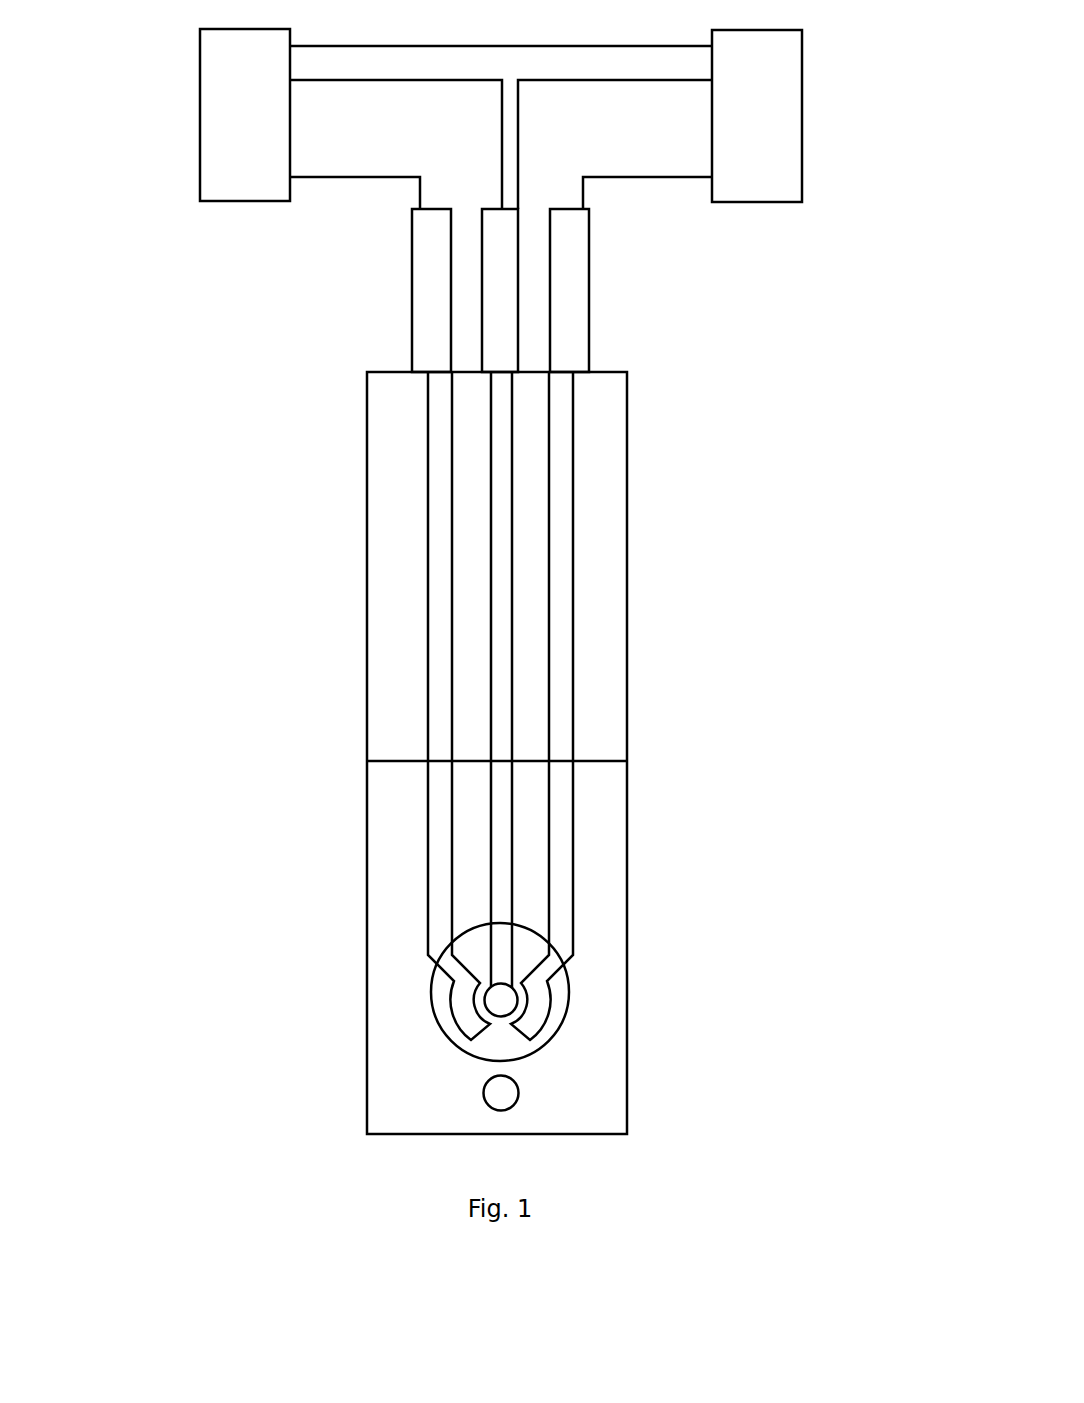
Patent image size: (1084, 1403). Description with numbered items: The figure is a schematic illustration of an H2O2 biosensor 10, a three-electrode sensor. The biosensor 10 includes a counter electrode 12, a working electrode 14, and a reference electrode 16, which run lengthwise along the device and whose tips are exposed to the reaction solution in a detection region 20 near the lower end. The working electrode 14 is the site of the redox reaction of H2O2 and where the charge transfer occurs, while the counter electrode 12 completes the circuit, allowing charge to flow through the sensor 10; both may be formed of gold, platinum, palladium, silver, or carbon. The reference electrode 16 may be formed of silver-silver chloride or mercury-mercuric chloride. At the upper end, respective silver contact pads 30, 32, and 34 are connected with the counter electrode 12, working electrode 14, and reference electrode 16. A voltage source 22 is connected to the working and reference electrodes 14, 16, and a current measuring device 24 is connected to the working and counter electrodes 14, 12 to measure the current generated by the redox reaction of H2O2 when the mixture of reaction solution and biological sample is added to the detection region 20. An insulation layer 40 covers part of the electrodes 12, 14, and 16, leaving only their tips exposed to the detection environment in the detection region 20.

The biosensor 10 is at (702, 671).
The counter electrode 12 is at (414, 866).
The working electrode 14 is at (511, 858).
The reference electrode 16 is at (575, 810).
The detection region 20 is at (485, 1069).
The voltage source 22 is at (800, 100).
The current measuring device 24 is at (200, 150).
The silver contact pad 30 is at (452, 207).
The silver contact pad 32 is at (495, 207).
The silver contact pad 34 is at (564, 207).
The insulation layer 40 is at (627, 993).